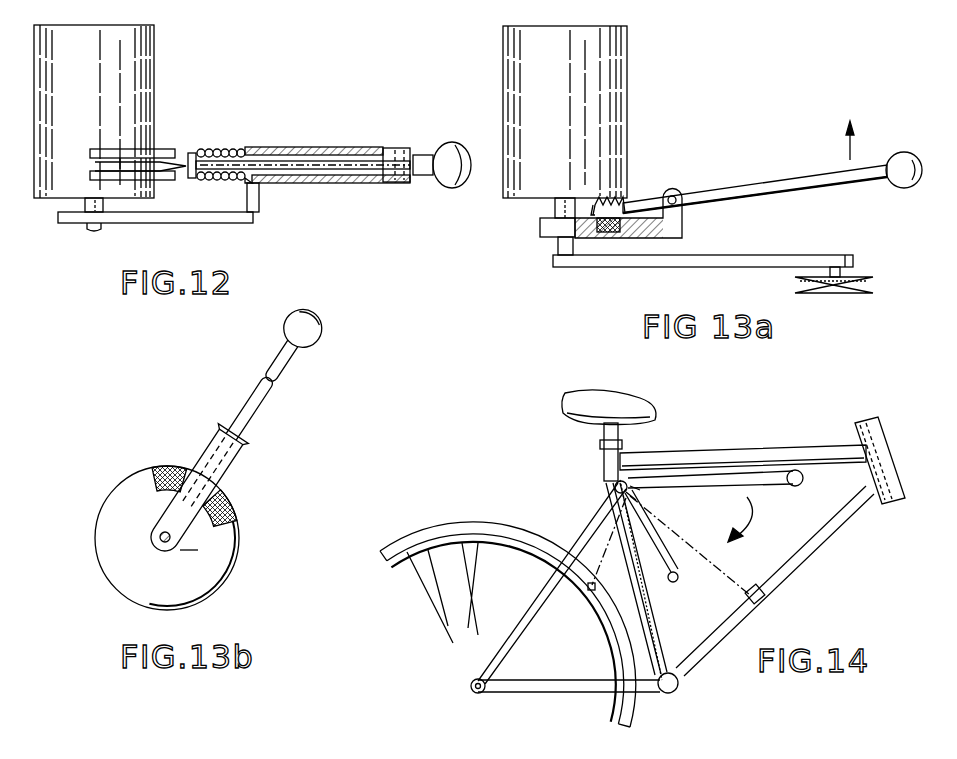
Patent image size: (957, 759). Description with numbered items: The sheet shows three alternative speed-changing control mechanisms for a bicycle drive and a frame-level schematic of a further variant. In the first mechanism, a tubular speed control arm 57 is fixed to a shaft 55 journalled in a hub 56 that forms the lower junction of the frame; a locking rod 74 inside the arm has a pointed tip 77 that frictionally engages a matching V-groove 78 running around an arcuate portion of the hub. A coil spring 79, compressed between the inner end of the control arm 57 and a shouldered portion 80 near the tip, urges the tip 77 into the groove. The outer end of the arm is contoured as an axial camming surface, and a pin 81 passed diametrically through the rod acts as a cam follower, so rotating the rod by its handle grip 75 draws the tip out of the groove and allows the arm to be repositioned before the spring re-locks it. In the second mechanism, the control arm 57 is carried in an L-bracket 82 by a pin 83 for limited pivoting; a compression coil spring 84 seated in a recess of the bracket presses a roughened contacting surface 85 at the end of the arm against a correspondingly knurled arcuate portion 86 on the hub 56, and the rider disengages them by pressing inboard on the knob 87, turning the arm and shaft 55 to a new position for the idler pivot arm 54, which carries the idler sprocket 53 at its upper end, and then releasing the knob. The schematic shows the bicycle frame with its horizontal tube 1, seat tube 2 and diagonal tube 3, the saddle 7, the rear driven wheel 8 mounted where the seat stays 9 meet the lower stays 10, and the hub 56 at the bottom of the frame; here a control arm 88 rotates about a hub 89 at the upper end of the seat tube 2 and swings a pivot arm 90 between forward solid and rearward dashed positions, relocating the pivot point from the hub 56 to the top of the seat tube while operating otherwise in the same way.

In FIG. 14, the horizontal tube 1 is at (818, 452).
In FIG. 14, the seat tube 2 is at (662, 628).
In FIG. 14, the diagonal tube 3 is at (850, 522).
In FIG. 14, the saddle 7 is at (655, 409).
In FIG. 14, the rear driven wheel 8 is at (424, 537).
In FIG. 14, the seat stays 9 is at (576, 507).
In FIG. 14, the lower stays 10 is at (561, 690).
In FIG. 13a, the idler sprocket 53 is at (858, 290).
In FIG. 13a, the idler pivot arm 54 is at (588, 267).
In FIG. 12, the shaft 55 is at (88, 231).
In FIG. 13a, the shaft 55 is at (558, 247).
In FIG. 13b, the shaft 55 is at (160, 540).
In FIG. 12, the hub 56 is at (138, 44).
In FIG. 13a, the hub 56 is at (618, 88).
In FIG. 13b, the hub 56 is at (98, 505).
In FIG. 14, the hub 56 is at (678, 682).
In FIG. 12, the speed control arm 57 is at (305, 147).
In FIG. 13a, the speed control arm 57 is at (775, 168).
In FIG. 13b, the speed control arm 57 is at (280, 379).
In FIG. 12, the locking rod 74 is at (345, 170).
In FIG. 12, the handle grip 75 is at (452, 142).
In FIG. 12, the pointed tip 77 is at (197, 179).
In FIG. 12, the V-groove 78 is at (190, 158).
In FIG. 12, the coil spring 79 is at (236, 152).
In FIG. 12, the shouldered portion 80 is at (200, 150).
In FIG. 12, the pin 81 is at (406, 160).
In FIG. 13a, the L-bracket 82 is at (680, 230).
In FIG. 13b, the L-bracket 82 is at (222, 483).
In FIG. 13a, the pin 83 is at (672, 196).
In FIG. 13b, the pin 83 is at (240, 447).
In FIG. 13a, the compression coil spring 84 is at (612, 233).
In FIG. 13a, the contacting surface 85 is at (594, 203).
In FIG. 13a, the arcuate portion 86 is at (618, 196).
In FIG. 13b, the arcuate portion 86 is at (232, 520).
In FIG. 13a, the knob 87 is at (897, 184).
In FIG. 13b, the knob 87 is at (318, 341).
In FIG. 14, the control arm 88 is at (710, 484).
In FIG. 14, the hub 89 is at (636, 491).
In FIG. 14, the pivot arm 90 is at (680, 576).